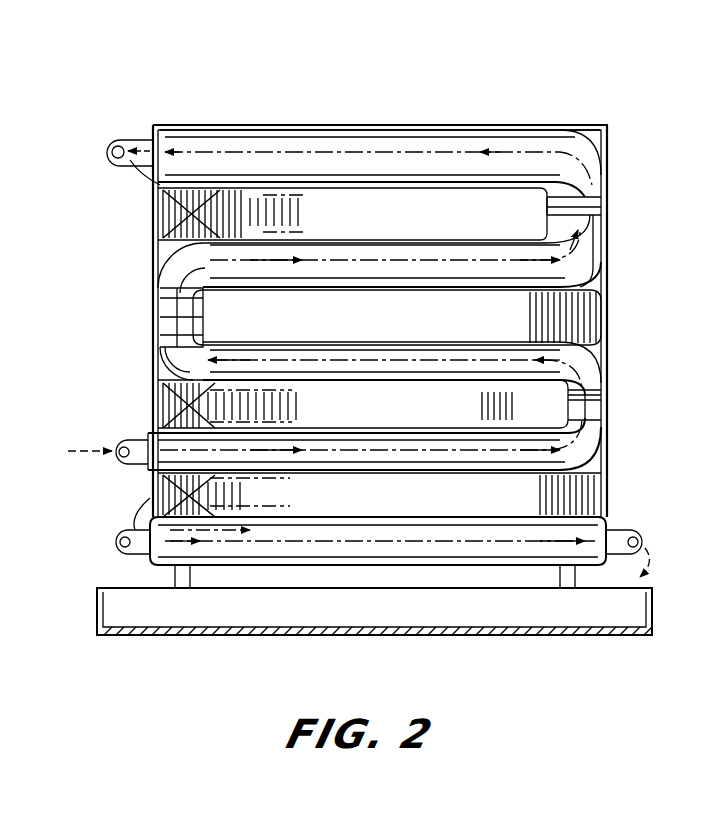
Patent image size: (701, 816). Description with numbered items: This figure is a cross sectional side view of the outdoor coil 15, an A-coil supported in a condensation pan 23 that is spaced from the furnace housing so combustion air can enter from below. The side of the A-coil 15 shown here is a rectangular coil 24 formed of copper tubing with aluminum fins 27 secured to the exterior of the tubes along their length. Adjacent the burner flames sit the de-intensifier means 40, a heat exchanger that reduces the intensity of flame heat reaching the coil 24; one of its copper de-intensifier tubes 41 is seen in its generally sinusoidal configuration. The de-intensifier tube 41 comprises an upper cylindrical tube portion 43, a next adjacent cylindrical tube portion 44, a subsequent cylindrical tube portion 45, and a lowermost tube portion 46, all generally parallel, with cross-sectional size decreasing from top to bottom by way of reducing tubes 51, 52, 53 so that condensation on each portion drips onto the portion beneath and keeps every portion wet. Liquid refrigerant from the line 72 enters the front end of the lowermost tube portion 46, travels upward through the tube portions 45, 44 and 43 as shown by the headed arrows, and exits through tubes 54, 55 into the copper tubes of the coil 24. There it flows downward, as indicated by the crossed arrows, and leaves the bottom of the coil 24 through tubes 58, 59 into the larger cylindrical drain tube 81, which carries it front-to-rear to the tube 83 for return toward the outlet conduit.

The outdoor coil 15 is at (569, 93).
The condensation pan 23 is at (162, 636).
The rectangular coil 24 is at (604, 315).
The aluminum fins 27 is at (300, 208).
The de-intensifier means 40 is at (479, 121).
The de-intensifier tube 41 is at (363, 128).
The upper cylindrical tube portion 43 is at (424, 152).
The next adjacent cylindrical tube portion 44 is at (396, 272).
The subsequent cylindrical tube portion 45 is at (394, 372).
The lowermost tube portion 46 is at (394, 462).
The reducing tube 51 is at (603, 204).
The reducing tube 52 is at (158, 318).
The reducing tube 53 is at (605, 397).
The tube 54 is at (118, 134).
The tube 55 is at (175, 200).
The tube 58 is at (130, 548).
The tube 59 is at (142, 514).
The line 72 is at (138, 466).
The drain tube 81 is at (447, 549).
The tube 83 is at (612, 528).